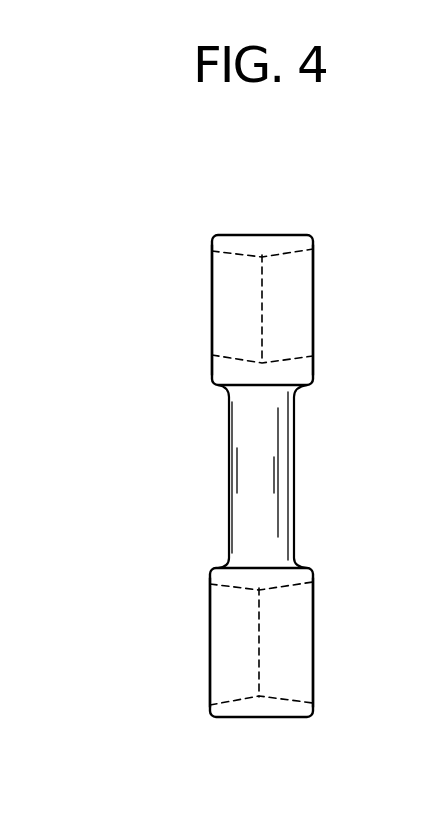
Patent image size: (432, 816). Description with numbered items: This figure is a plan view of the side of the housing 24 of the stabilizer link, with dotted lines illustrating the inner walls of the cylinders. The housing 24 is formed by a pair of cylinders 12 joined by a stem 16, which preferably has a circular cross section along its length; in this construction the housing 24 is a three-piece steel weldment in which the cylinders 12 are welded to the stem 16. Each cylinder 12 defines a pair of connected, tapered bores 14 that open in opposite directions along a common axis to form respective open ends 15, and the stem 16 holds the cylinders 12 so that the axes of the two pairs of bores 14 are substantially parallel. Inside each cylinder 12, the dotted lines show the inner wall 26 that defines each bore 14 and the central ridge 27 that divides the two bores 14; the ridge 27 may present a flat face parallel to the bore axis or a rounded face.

The cylinder 12 is at (259, 220).
The tapered bore 14 is at (290, 257).
The open end 15 is at (200, 304).
The stem 16 is at (228, 440).
The housing 24 is at (310, 455).
The inner wall 26 is at (238, 258).
The central ridge 27 is at (262, 300).